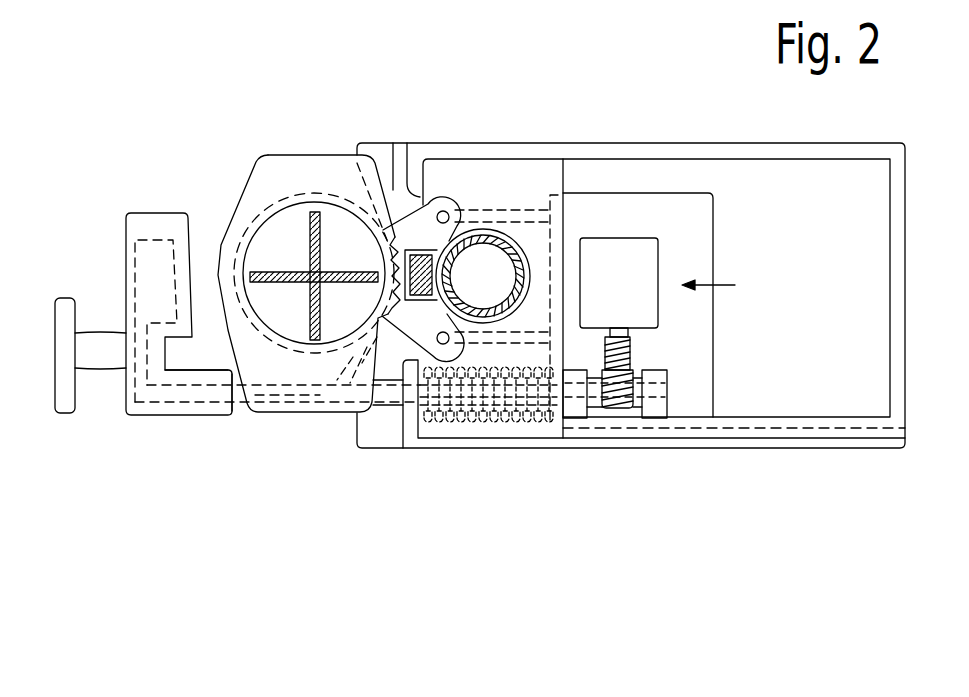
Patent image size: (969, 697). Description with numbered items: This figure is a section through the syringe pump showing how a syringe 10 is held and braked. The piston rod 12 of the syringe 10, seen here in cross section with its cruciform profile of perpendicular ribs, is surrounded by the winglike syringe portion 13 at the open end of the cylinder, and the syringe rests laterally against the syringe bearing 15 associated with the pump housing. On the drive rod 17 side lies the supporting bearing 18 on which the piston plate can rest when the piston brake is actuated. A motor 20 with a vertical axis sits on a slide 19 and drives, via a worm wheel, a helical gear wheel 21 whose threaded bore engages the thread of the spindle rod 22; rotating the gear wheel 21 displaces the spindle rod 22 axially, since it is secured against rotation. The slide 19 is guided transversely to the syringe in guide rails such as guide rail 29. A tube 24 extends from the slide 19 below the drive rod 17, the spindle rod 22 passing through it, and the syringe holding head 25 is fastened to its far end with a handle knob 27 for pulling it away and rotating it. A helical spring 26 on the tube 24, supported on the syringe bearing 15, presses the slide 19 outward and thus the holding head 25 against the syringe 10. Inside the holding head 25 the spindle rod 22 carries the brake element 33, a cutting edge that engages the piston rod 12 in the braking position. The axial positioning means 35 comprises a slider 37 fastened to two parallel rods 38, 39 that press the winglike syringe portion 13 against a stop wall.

The syringe 10 is at (340, 148).
The piston rod 12 is at (311, 200).
The winglike syringe portion 13 is at (296, 247).
The syringe bearing 15 is at (277, 439).
The drive rod 17 is at (447, 270).
The supporting bearing 18 is at (544, 206).
The slide 19 is at (715, 383).
The motor 20 is at (643, 267).
The helical gear wheel 21 is at (622, 385).
The spindle rod 22 is at (285, 395).
The tube 24 is at (240, 408).
The syringe holding head 25 is at (183, 310).
The helical spring 26 is at (475, 417).
The handle knob 27 is at (95, 343).
The guide rail 29 is at (777, 422).
The brake element 33 is at (162, 253).
The axial positioning means 35 is at (398, 210).
The slider 37 is at (444, 224).
The rod 38 is at (473, 438).
The rod 39 is at (448, 211).